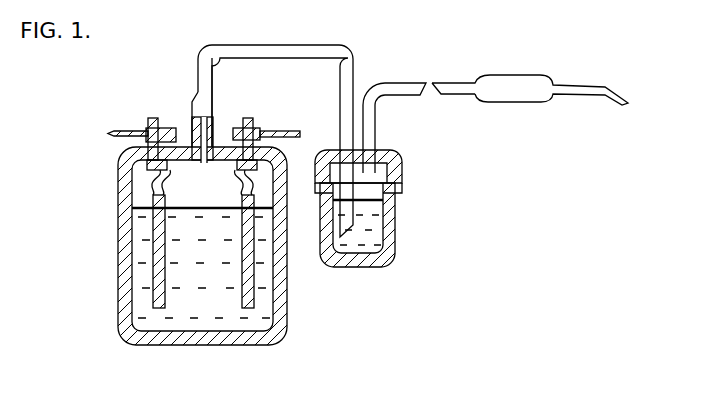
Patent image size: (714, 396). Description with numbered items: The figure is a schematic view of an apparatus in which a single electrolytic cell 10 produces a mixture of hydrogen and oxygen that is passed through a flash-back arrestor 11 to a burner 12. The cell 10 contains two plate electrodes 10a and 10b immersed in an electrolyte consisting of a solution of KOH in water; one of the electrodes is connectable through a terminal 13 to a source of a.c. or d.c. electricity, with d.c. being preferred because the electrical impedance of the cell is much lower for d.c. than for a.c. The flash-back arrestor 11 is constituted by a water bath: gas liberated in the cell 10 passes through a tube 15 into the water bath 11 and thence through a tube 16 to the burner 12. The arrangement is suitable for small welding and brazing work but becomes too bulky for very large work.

The electrolytic cell 10 is at (184, 118).
The plate electrode 10a is at (152, 267).
The plate electrode 10b is at (241, 274).
The flash-back arrestor 11 is at (418, 157).
The burner 12 is at (536, 93).
The terminal 13 is at (149, 128).
The tube 15 is at (307, 60).
The tube 16 is at (373, 90).